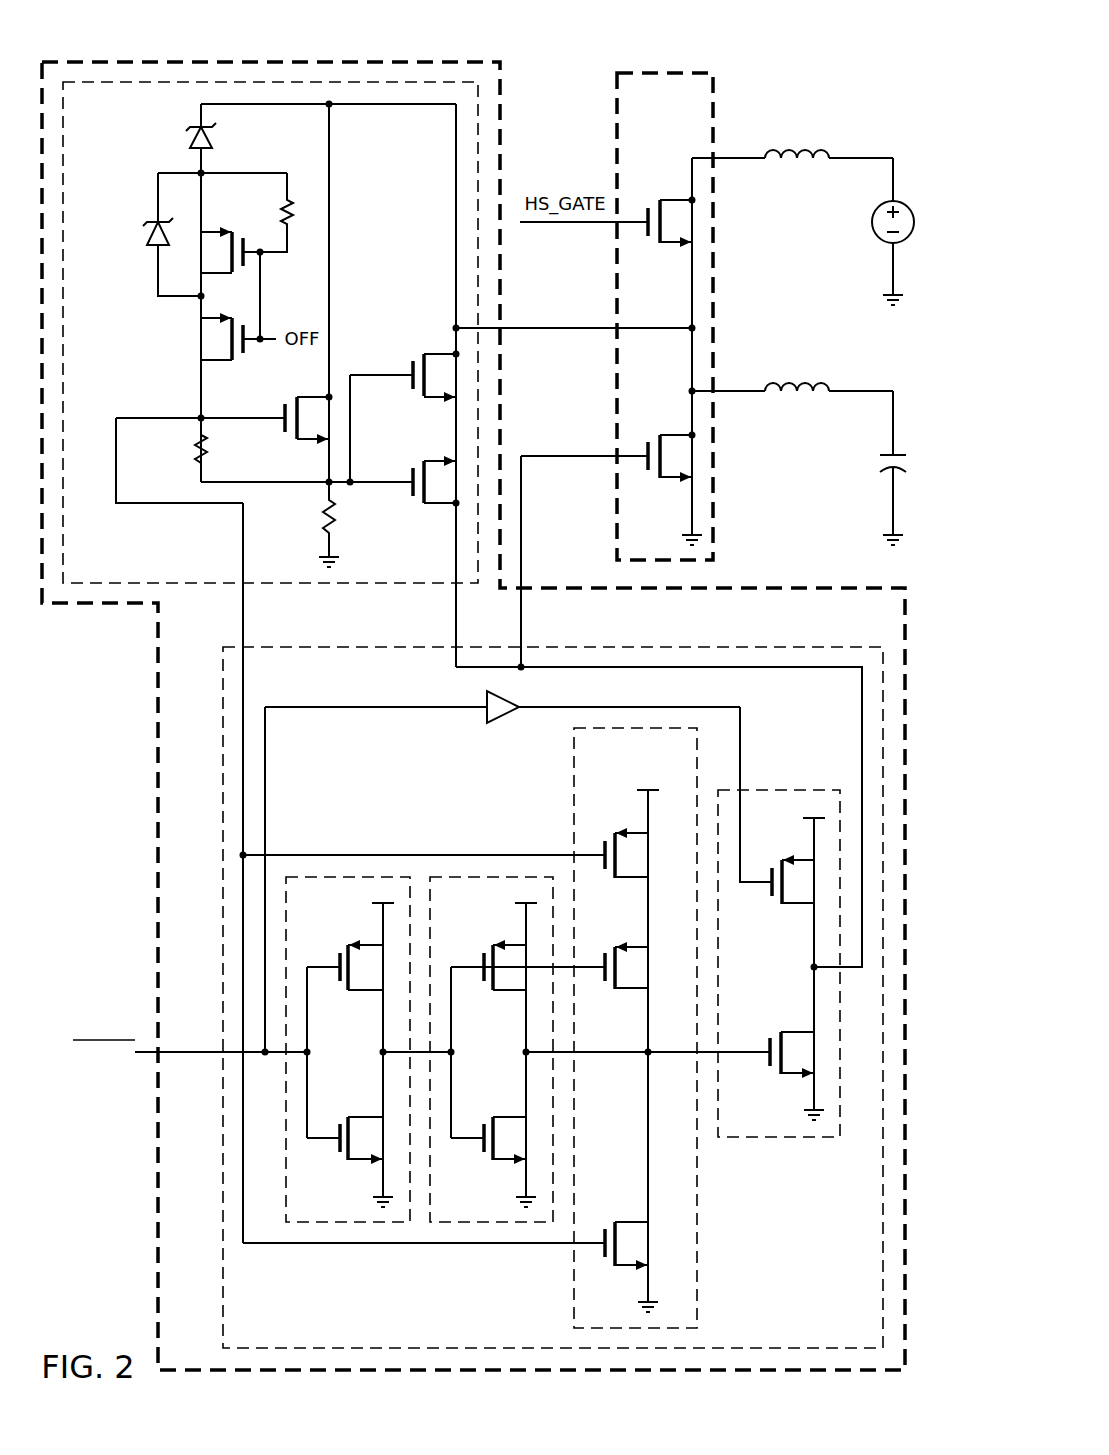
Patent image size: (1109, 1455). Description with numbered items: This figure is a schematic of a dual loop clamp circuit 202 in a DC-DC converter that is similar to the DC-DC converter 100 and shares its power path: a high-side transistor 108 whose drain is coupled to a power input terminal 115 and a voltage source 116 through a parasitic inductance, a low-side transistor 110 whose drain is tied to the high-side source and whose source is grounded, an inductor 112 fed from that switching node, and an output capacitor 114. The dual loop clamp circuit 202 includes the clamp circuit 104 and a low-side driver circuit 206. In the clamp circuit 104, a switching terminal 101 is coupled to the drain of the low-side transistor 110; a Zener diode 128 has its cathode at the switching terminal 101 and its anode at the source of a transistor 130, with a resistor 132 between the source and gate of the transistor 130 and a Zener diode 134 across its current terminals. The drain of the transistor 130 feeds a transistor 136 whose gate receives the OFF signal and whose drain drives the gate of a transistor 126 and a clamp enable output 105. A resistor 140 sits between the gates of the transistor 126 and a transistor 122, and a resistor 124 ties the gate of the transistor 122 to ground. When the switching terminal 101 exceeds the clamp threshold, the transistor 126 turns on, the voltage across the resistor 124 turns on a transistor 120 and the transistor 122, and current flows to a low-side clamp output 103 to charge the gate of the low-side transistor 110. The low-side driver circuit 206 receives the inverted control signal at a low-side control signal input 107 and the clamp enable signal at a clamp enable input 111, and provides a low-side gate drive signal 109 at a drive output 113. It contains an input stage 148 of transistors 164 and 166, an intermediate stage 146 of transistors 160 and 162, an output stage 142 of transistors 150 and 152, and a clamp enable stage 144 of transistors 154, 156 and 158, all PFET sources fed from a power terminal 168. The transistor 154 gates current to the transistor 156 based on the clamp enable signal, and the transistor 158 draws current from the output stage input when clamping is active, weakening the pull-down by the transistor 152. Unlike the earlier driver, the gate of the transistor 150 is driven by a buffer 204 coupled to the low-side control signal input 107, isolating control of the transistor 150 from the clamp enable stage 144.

The DC-DC converter 100 is at (794, 56).
The dual loop clamp circuit 202 is at (214, 58).
The clamp circuit 104 is at (115, 123).
The Zener diode 128 is at (188, 140).
The transistor 130 is at (245, 232).
The resistor 132 is at (288, 200).
The Zener diode 134 is at (146, 240).
The transistor 136 is at (245, 362).
The resistor 140 is at (196, 450).
The transistor 126 is at (284, 428).
The resistor 124 is at (325, 515).
The transistor 120 is at (410, 367).
The transistor 122 is at (410, 493).
The switching terminal 101 is at (557, 326).
The low-side clamp output 103 is at (452, 592).
The clamp enable output 105 is at (241, 590).
The clamp enable input 111 is at (248, 645).
The drive output 113 is at (524, 644).
The high-side transistor 108 is at (641, 212).
The low-side transistor 110 is at (640, 470).
The low-side gate drive signal 109 is at (572, 458).
The inductor 112 is at (805, 378).
The output capacitor 114 is at (882, 463).
The power input terminal 115 is at (862, 162).
The voltage source 116 is at (872, 232).
The low-side control signal input 107 is at (216, 1056).
The buffer 204 is at (508, 718).
The low-side driver circuit 206 is at (378, 1313).
The clamp enable stage 144 is at (585, 771).
The power terminal 168 is at (650, 788).
The output stage 142 is at (752, 835).
The input stage 148 is at (308, 920).
The intermediate stage 146 is at (453, 920).
The transistor 154 is at (600, 880).
The transistor 156 is at (600, 992).
The transistor 158 is at (600, 1270).
The transistor 150 is at (765, 906).
The transistor 152 is at (765, 1076).
The transistor 164 is at (333, 992).
The transistor 166 is at (333, 1165).
The transistor 160 is at (478, 992).
The transistor 162 is at (478, 1165).